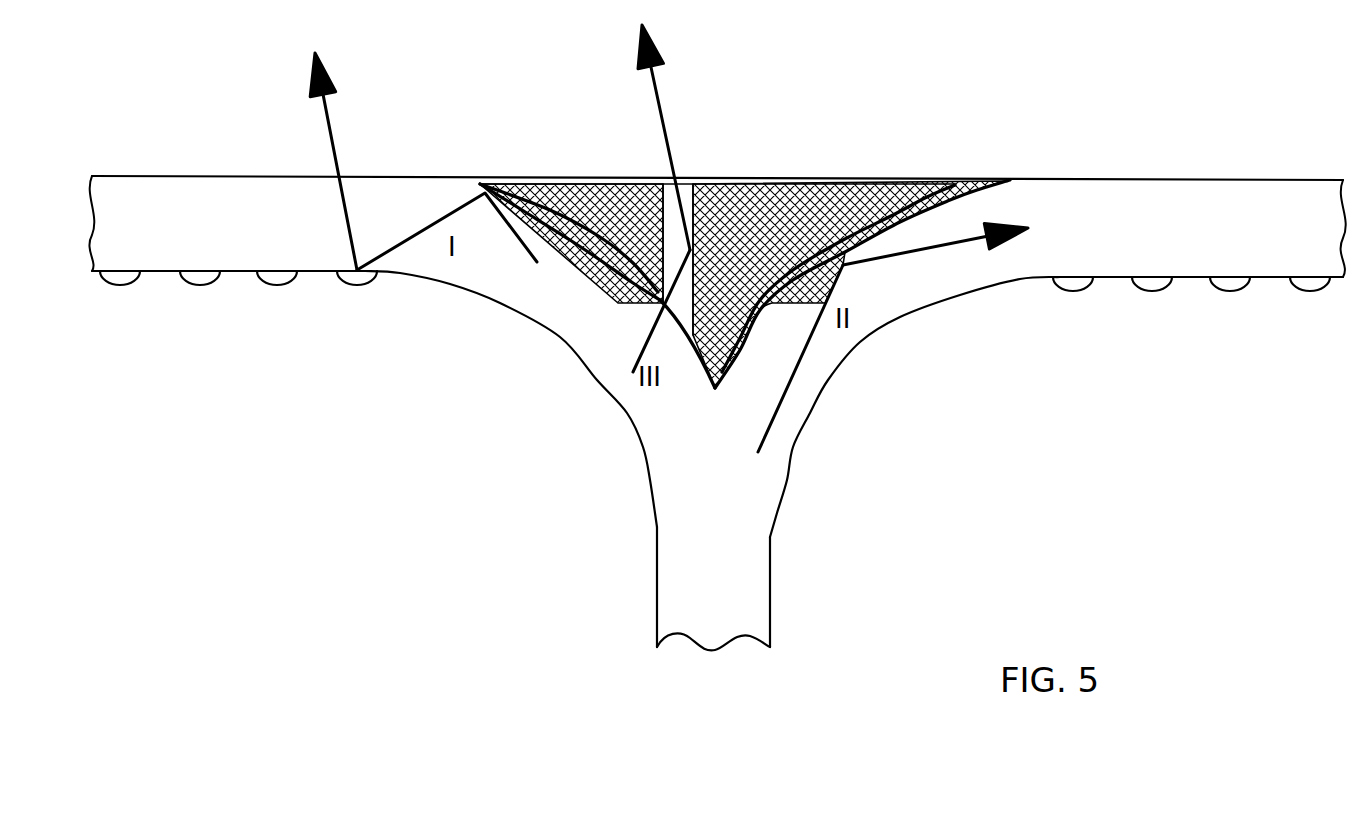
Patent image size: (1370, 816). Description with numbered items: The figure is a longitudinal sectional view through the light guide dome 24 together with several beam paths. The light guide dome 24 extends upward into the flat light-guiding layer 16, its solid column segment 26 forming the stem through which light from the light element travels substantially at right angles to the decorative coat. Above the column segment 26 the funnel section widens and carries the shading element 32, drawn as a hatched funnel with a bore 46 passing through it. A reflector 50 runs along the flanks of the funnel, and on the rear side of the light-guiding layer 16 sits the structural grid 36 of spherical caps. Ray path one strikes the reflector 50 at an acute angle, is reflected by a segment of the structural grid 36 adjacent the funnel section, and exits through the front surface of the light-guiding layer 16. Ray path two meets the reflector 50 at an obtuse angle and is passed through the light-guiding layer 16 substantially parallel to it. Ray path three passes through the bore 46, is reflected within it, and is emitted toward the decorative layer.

The light-guiding layer 16 is at (1202, 240).
The structural grid 36 is at (208, 284).
The shading element 32 is at (838, 197).
The bore 46 is at (688, 183).
The reflector 50 is at (613, 283).
The column segment 26 is at (760, 497).
The light guide dome 24 is at (770, 625).